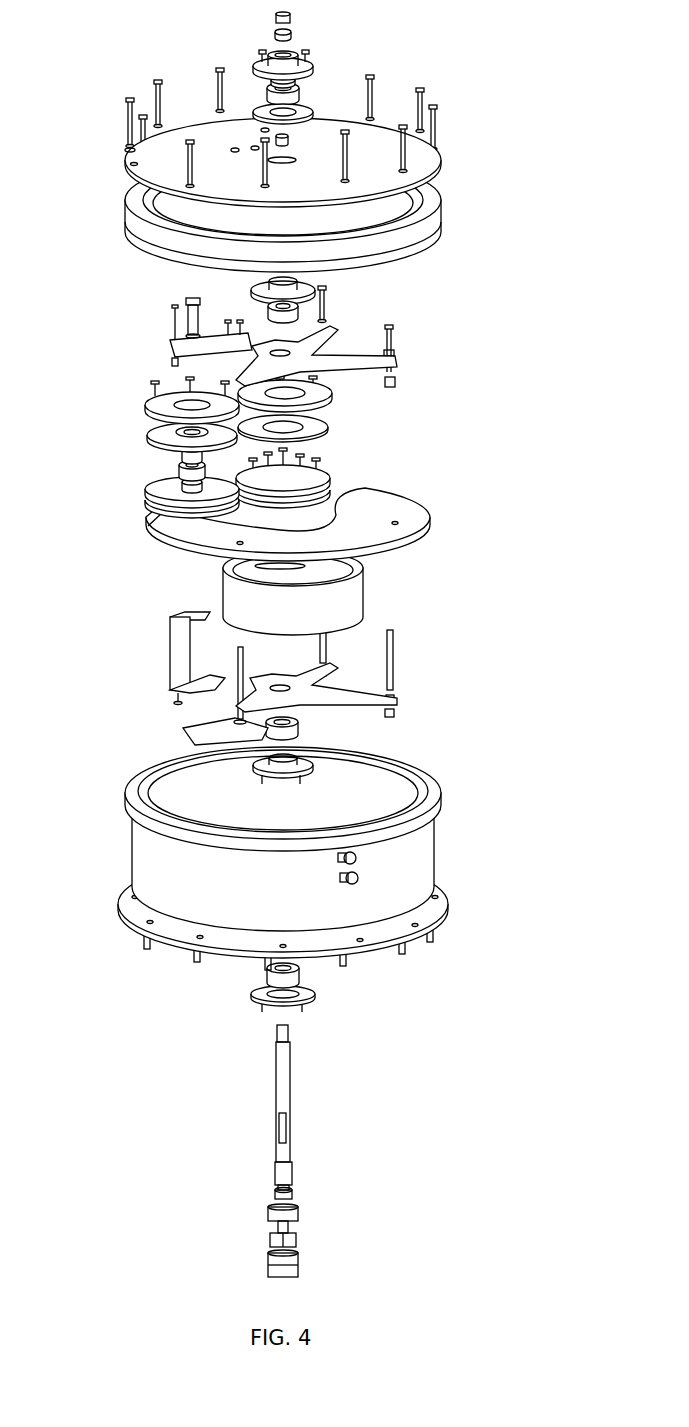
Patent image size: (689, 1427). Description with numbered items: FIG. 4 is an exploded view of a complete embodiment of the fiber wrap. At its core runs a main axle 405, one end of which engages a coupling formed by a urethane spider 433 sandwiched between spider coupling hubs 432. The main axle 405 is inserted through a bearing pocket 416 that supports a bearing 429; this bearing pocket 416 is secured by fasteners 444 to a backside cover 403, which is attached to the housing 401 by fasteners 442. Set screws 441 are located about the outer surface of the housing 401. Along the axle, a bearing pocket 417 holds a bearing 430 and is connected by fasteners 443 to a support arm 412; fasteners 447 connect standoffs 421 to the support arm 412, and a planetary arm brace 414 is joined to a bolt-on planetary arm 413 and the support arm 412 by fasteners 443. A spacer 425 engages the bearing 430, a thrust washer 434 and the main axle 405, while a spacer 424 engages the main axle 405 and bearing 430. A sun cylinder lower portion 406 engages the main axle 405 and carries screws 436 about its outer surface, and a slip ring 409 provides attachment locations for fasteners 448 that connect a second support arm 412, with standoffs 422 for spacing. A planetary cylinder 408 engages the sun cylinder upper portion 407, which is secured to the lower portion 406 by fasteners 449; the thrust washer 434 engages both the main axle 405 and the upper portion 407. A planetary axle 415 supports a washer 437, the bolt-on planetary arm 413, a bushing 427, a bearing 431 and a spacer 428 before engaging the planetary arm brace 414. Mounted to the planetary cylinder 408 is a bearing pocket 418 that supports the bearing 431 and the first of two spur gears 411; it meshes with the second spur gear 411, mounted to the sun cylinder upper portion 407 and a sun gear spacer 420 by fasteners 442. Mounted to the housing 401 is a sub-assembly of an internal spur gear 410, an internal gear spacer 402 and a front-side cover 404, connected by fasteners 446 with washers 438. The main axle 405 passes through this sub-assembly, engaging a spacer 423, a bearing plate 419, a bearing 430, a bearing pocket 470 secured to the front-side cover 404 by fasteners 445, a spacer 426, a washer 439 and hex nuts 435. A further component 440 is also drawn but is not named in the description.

The housing 401 is at (133, 770).
The internal gear spacer 402 is at (440, 214).
The backside cover 403 is at (432, 936).
The front-side cover 404 is at (441, 168).
The main axle 405 is at (293, 1195).
The sun cylinder lower portion 406 is at (223, 603).
The sun cylinder upper portion 407 is at (430, 513).
The planetary cylinder 408 is at (145, 486).
The slip ring 409 is at (410, 547).
The internal spur gear 410 is at (438, 245).
The spur gears 411 is at (145, 403).
The support arm 412 is at (397, 365).
The bolt-on planetary arm 413 is at (187, 733).
The planetary arm brace 414 is at (170, 648).
The planetary axle 415 is at (185, 300).
The bearing pocket 416 is at (312, 996).
The bearing pocket 417 is at (252, 290).
The bearing pocket 418 is at (145, 433).
The bearing plate 419 is at (437, 133).
The sun gear spacer 420 is at (327, 427).
The standoffs 421 is at (393, 650).
The standoffs 422 is at (395, 383).
The spacer 423 is at (437, 184).
The spacer 424 is at (394, 354).
The spacer 425 is at (395, 713).
The spacer 426 is at (300, 62).
The bushing 427 is at (180, 457).
The spacer 428 is at (145, 498).
The bearing 429 is at (300, 978).
The bearing 430 is at (266, 92).
The bearing 431 is at (180, 467).
The spider coupling hubs 432 is at (296, 1213).
The urethane spider 433 is at (296, 1243).
The thrust washer 434 is at (322, 458).
The hex nuts 435 is at (291, 20).
The screws 436 is at (363, 622).
The washer 437 is at (170, 343).
The washers 438 is at (128, 164).
The washer 439 is at (292, 36).
The washer 440 is at (253, 116).
The set screws 441 is at (360, 882).
The fasteners 442 is at (153, 382).
The fasteners 443 is at (326, 287).
The fasteners 444 is at (292, 1022).
The fasteners 445 is at (258, 62).
The fasteners 446 is at (128, 138).
The fasteners 447 is at (320, 675).
The fasteners 448 is at (393, 327).
The fasteners 449 is at (324, 468).
The bearing pocket 470 is at (296, 82).